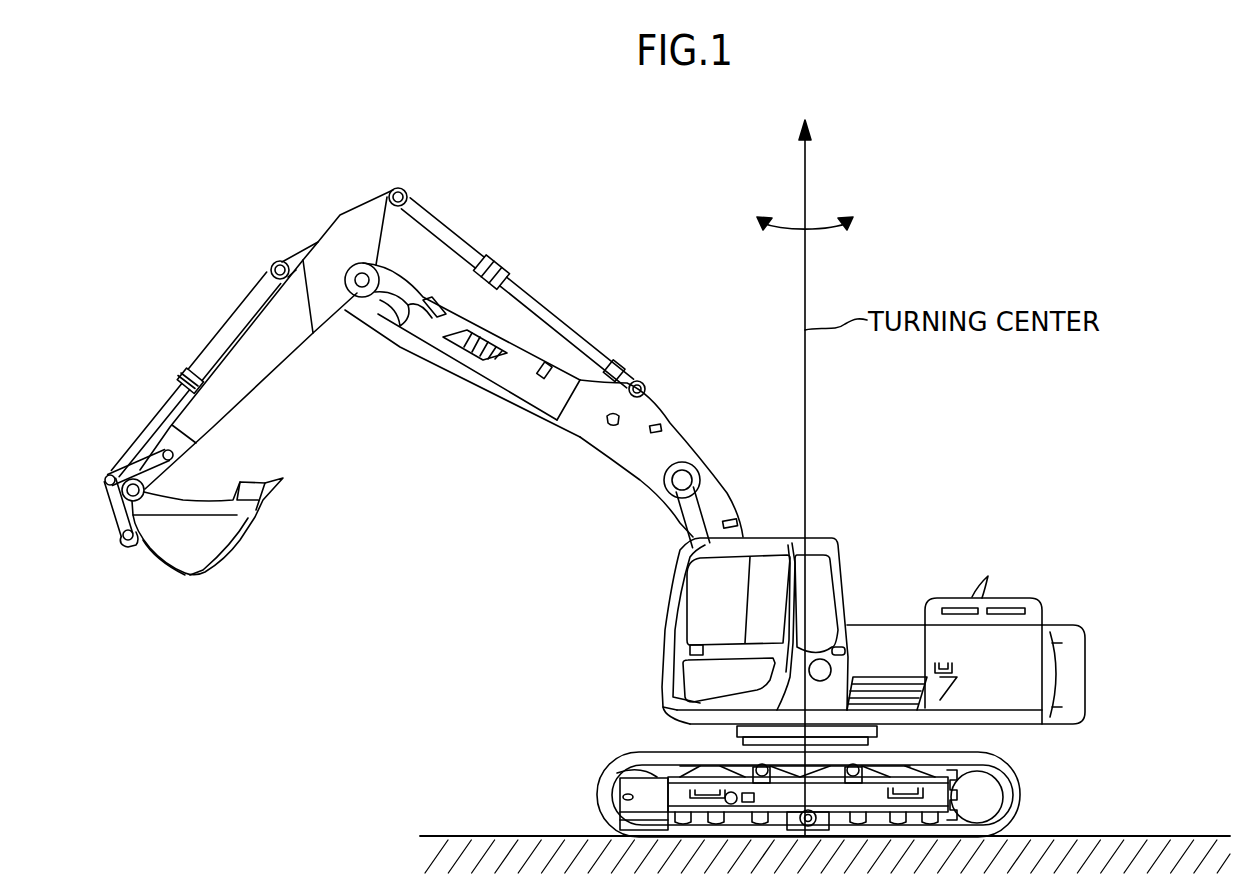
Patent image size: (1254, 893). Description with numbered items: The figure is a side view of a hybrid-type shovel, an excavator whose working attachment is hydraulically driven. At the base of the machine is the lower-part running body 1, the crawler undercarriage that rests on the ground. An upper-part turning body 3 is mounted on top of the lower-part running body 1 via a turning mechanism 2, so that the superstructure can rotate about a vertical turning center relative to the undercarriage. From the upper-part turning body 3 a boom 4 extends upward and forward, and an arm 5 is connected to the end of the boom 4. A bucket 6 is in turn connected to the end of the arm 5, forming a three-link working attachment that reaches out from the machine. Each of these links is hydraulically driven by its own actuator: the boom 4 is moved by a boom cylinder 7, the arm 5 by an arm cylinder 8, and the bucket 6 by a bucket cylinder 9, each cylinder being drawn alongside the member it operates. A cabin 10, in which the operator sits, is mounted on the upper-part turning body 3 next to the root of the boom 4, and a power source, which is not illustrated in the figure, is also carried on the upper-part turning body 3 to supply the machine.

The lower-part running body 1 is at (598, 808).
The turning mechanism 2 is at (877, 733).
The upper-part turning body 3 is at (890, 623).
The boom 4 is at (592, 435).
The arm 5 is at (285, 352).
The bucket 6 is at (190, 573).
The boom cylinder 7 is at (693, 517).
The arm cylinder 8 is at (577, 337).
The bucket cylinder 9 is at (223, 337).
The cabin 10 is at (827, 537).